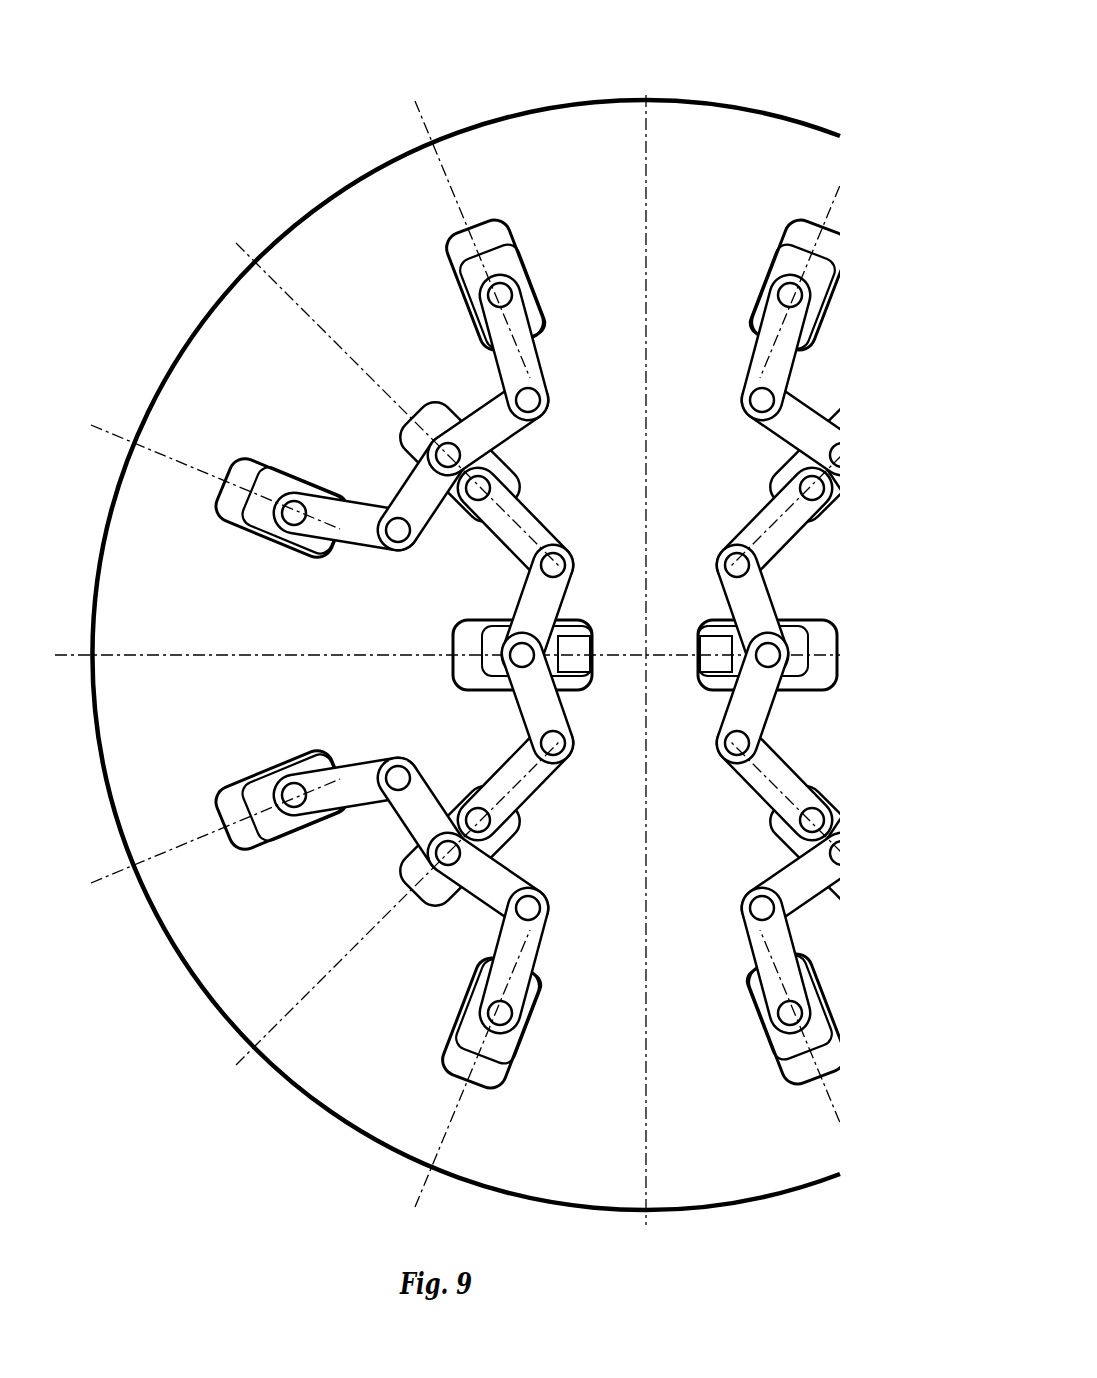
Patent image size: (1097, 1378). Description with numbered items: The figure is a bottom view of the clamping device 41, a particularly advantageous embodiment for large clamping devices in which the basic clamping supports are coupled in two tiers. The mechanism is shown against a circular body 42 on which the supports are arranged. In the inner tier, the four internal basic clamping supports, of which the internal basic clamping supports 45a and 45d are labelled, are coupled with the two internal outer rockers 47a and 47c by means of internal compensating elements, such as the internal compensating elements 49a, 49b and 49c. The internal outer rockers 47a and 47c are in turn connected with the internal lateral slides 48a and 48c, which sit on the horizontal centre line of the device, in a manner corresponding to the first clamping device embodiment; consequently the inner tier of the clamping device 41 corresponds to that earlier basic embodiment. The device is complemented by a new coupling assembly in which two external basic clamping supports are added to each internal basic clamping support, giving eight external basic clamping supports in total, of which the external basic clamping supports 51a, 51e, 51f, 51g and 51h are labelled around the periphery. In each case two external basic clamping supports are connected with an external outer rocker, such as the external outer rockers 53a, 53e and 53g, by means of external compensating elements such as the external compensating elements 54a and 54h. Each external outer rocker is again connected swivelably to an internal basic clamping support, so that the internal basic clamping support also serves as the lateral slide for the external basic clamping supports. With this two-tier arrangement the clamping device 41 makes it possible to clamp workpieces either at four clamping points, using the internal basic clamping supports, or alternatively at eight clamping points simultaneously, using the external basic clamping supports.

The clamping device 41 is at (133, 83).
The disc plate 42 is at (558, 137).
The external basic clamping support 51a is at (787, 258).
The external basic clamping support 51e is at (473, 1033).
The external basic clamping support 51f is at (267, 797).
The external basic clamping support 51g is at (267, 487).
The external basic clamping support 51h is at (470, 268).
The external compensating element 54a is at (773, 357).
The external compensating element 54h is at (513, 352).
The external outer rocker 53a is at (805, 431).
The external outer rocker 53e is at (413, 815).
The external outer rocker 53g is at (420, 474).
The internal basic clamping support 45a is at (797, 468).
The internal basic clamping support 45d is at (446, 402).
The internal compensating element 49a is at (753, 535).
The internal compensating element 49b is at (763, 780).
The internal compensating element 49c is at (490, 777).
The internal outer rocker 47a is at (743, 597).
The internal outer rocker 47c is at (520, 702).
The internal lateral slide 48a is at (738, 621).
The internal lateral slide 48c is at (493, 638).